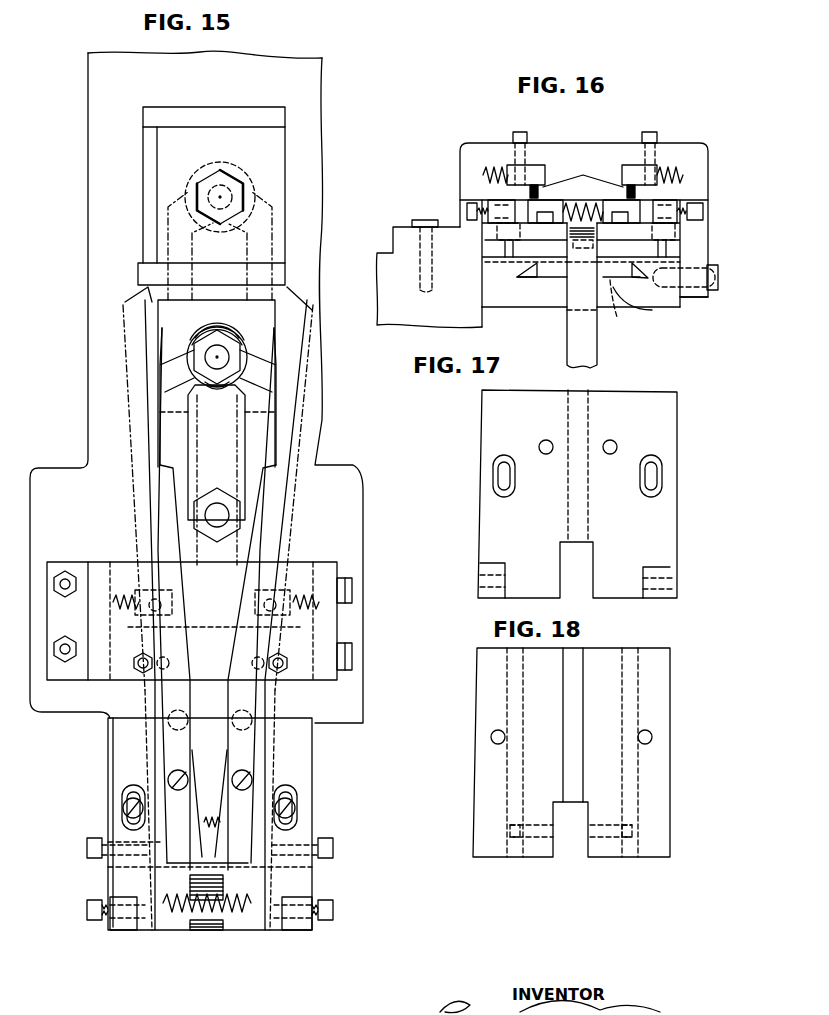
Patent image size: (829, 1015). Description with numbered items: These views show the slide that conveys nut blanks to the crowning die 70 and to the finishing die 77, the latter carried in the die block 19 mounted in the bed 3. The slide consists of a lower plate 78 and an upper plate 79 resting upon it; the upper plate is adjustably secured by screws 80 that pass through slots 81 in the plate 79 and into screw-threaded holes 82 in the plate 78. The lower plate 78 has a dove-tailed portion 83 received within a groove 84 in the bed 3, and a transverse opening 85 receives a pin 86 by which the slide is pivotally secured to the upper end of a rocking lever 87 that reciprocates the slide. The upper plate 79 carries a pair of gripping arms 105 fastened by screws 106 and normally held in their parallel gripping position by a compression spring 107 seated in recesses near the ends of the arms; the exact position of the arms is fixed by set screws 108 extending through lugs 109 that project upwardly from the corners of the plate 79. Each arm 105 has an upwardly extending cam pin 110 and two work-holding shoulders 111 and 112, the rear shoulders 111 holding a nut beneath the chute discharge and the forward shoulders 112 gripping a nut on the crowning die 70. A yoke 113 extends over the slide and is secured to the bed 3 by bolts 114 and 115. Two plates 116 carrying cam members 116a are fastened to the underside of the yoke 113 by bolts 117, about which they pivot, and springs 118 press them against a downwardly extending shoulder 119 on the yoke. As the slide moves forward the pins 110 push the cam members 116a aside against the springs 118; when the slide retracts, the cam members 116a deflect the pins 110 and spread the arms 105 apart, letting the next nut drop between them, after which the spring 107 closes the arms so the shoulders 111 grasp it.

In FIG. 15, the bed 3 is at (90, 190).
In FIG. 16, the bed 3 is at (663, 297).
In FIG. 15, the die block 19 is at (165, 146).
In FIG. 15, the crowning die 70 is at (190, 342).
In FIG. 15, the finishing die 77 is at (235, 183).
In FIG. 16, the lower plate 78 is at (670, 250).
In FIG. 18, the lower plate 78 is at (655, 690).
In FIG. 15, the upper plate 79 is at (130, 742).
In FIG. 16, the upper plate 79 is at (672, 235).
In FIG. 17, the upper plate 79 is at (655, 517).
In FIG. 15, the screws 80 is at (125, 806).
In FIG. 16, the screws 80 is at (713, 260).
In FIG. 15, the slots 81 is at (126, 795).
In FIG. 17, the slots 81 is at (500, 475).
In FIG. 18, the screw-threaded holes 82 is at (491, 735).
In FIG. 16, the dove-tailed portion 83 is at (533, 270).
In FIG. 16, the groove 84 is at (553, 280).
In FIG. 16, the transverse opening 85 is at (621, 313).
In FIG. 18, the transverse opening 85 is at (540, 832).
In FIG. 16, the pin 86 is at (652, 310).
In FIG. 15, the rocking lever 87 is at (208, 920).
In FIG. 16, the rocking lever 87 is at (588, 353).
In FIG. 15, the gripping arms 105 is at (262, 443).
In FIG. 15, the screws 106 is at (170, 780).
In FIG. 16, the screws 106 is at (547, 232).
In FIG. 15, the compression spring 107 is at (205, 913).
In FIG. 16, the compression spring 107 is at (583, 204).
In FIG. 15, the set screws 108 is at (100, 900).
In FIG. 16, the set screws 108 is at (470, 198).
In FIG. 15, the lugs 109 is at (127, 922).
In FIG. 16, the lugs 109 is at (500, 210).
In FIG. 17, the lugs 109 is at (493, 565).
In FIG. 15, the cam pin 110 is at (252, 663).
In FIG. 16, the cam pin 110 is at (533, 198).
In FIG. 15, the work-holding shoulder 111 is at (177, 530).
In FIG. 15, the work-holding shoulder 112 is at (200, 362).
In FIG. 15, the yoke 113 is at (327, 612).
In FIG. 16, the yoke 113 is at (692, 157).
In FIG. 15, the bolt 114 is at (64, 600).
In FIG. 16, the bolt 114 is at (420, 247).
In FIG. 16, the bolt 115 is at (710, 278).
In FIG. 15, the plates 116 is at (345, 627).
In FIG. 16, the plates 116 is at (523, 170).
In FIG. 15, the cam members 116a is at (214, 626).
In FIG. 16, the cam members 116a is at (583, 170).
In FIG. 15, the bolts 117 is at (143, 674).
In FIG. 16, the bolts 117 is at (587, 147).
In FIG. 15, the springs 118 is at (215, 590).
In FIG. 16, the springs 118 is at (483, 170).
In FIG. 15, the shoulder 119 is at (162, 596).
In FIG. 16, the shoulder 119 is at (552, 173).